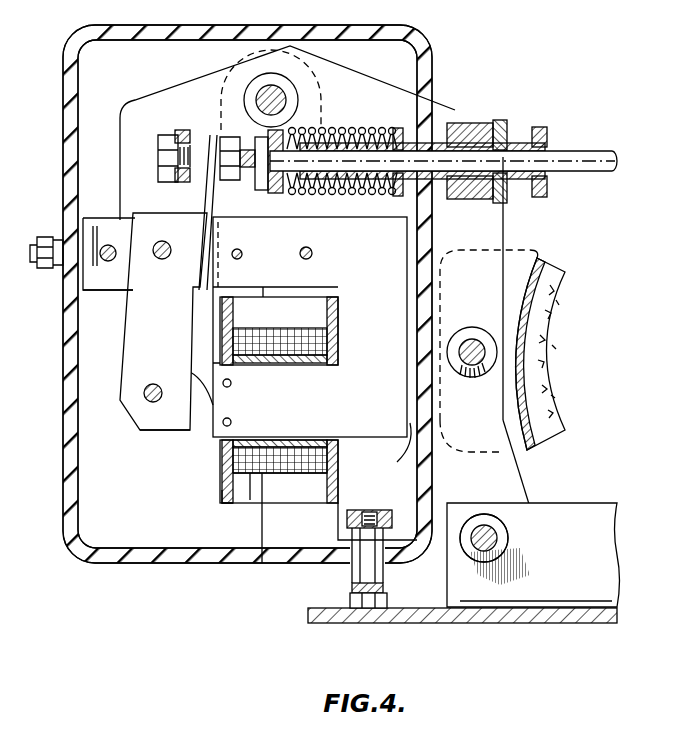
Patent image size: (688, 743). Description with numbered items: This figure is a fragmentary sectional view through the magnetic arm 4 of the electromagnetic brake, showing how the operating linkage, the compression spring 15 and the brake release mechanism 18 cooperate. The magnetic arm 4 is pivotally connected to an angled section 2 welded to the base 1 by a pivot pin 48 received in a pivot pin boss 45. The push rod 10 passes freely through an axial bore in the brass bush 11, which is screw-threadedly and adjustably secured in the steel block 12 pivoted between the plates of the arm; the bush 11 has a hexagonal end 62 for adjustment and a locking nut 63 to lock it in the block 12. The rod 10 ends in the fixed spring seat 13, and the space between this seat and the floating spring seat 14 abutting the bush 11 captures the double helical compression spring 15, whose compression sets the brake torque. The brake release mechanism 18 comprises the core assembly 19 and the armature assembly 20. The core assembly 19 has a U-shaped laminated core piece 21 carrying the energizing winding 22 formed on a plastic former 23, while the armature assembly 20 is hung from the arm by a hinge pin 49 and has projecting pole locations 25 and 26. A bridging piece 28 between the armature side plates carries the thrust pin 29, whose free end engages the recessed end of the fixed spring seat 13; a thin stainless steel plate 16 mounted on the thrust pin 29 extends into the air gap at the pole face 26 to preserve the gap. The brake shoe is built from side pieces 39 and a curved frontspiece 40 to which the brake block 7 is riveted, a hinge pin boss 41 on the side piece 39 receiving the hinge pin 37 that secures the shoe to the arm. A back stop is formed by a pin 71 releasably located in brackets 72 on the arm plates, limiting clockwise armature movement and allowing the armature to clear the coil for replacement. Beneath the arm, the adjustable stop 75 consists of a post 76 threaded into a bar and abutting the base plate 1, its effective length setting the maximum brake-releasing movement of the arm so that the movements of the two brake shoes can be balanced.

The base 1 is at (612, 626).
The angled sections 2 is at (612, 570).
The magnetic arm 4 is at (520, 492).
The brake block 7 is at (550, 414).
The push rod 10 is at (585, 160).
The bush 11 is at (513, 137).
The block 12 is at (460, 199).
The fixed spring seat 13 is at (262, 200).
The floating spring seat 14 is at (398, 198).
The compression spring 15 is at (334, 132).
The thin plate 16 is at (215, 237).
The brake release mechanism 18 is at (150, 443).
The core assembly 19 is at (251, 476).
The armature assembly 20 is at (119, 358).
The core piece 21 is at (397, 459).
The energizing winding 22 is at (292, 480).
The former 23 is at (222, 503).
The pole location 25 is at (229, 413).
The pole face 26 is at (206, 260).
The bridging piece 28 is at (186, 132).
The thrust pin 29 is at (244, 184).
The hinge pin 37 is at (476, 372).
The side pieces 39 is at (527, 434).
The frontspiece 40 is at (538, 262).
The hinge pin boss 41 is at (470, 327).
The pivot pin boss 45 is at (508, 556).
The pivot pin 48 is at (500, 537).
The hinge pin 49 is at (277, 102).
The hexagonal end 62 is at (538, 134).
The locking nut 63 is at (522, 288).
The pin 71 is at (106, 246).
The brackets 72 is at (103, 291).
The adjustable stop 75 is at (340, 590).
The post 76 is at (380, 597).